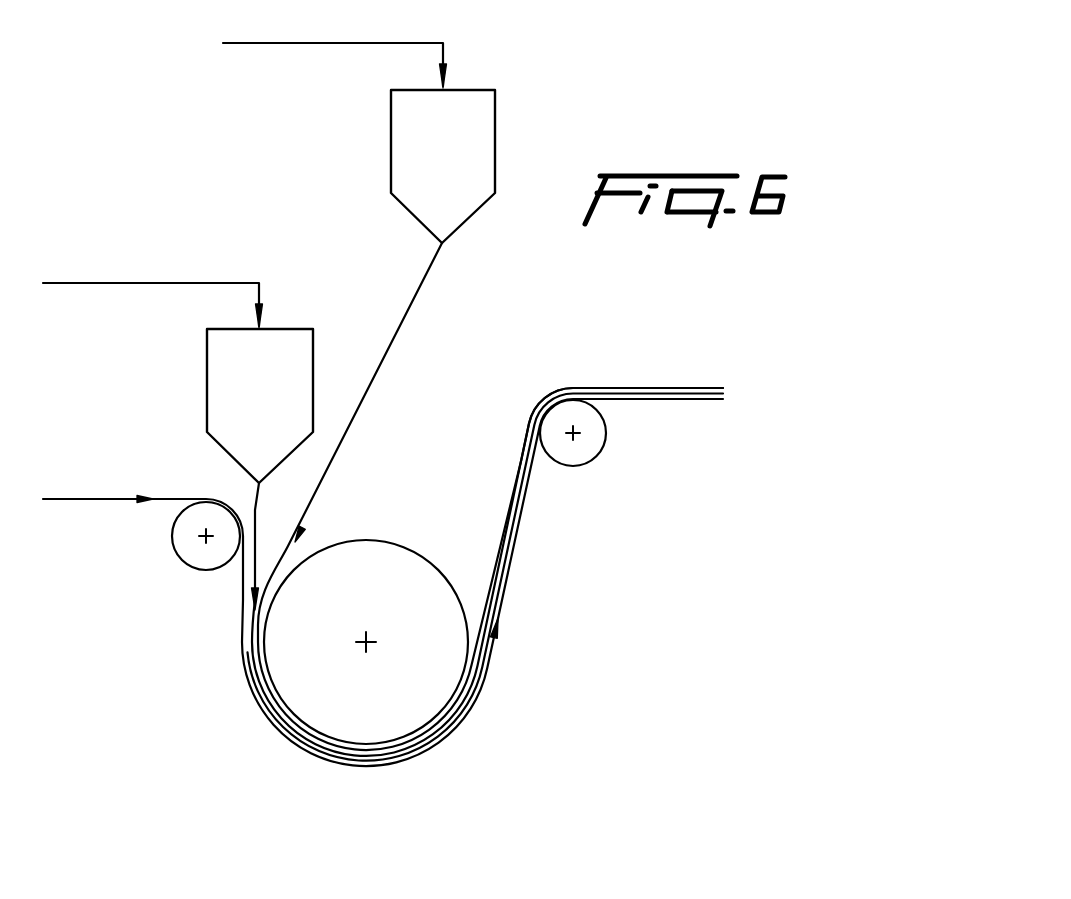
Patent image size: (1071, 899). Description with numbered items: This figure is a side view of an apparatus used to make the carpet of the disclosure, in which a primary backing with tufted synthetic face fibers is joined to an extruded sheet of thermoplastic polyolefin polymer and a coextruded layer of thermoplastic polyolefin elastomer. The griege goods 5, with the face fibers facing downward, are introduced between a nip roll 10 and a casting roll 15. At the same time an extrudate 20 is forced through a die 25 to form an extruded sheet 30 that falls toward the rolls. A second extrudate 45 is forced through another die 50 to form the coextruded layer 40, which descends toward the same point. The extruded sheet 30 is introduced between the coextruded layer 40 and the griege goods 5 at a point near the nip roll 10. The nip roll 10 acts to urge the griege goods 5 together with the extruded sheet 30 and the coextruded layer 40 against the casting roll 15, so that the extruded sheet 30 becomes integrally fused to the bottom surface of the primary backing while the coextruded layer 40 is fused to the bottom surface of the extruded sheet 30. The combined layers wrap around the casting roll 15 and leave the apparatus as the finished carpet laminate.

The griege goods 5 is at (97, 502).
The nip roll 10 is at (193, 560).
The casting roll 15 is at (445, 668).
The extrudate 20 is at (200, 283).
The die 25 is at (215, 388).
The extruded sheet 30 is at (255, 503).
The coextruded layer 40 is at (343, 450).
The extrudate 45 is at (382, 43).
The die 50 is at (400, 147).